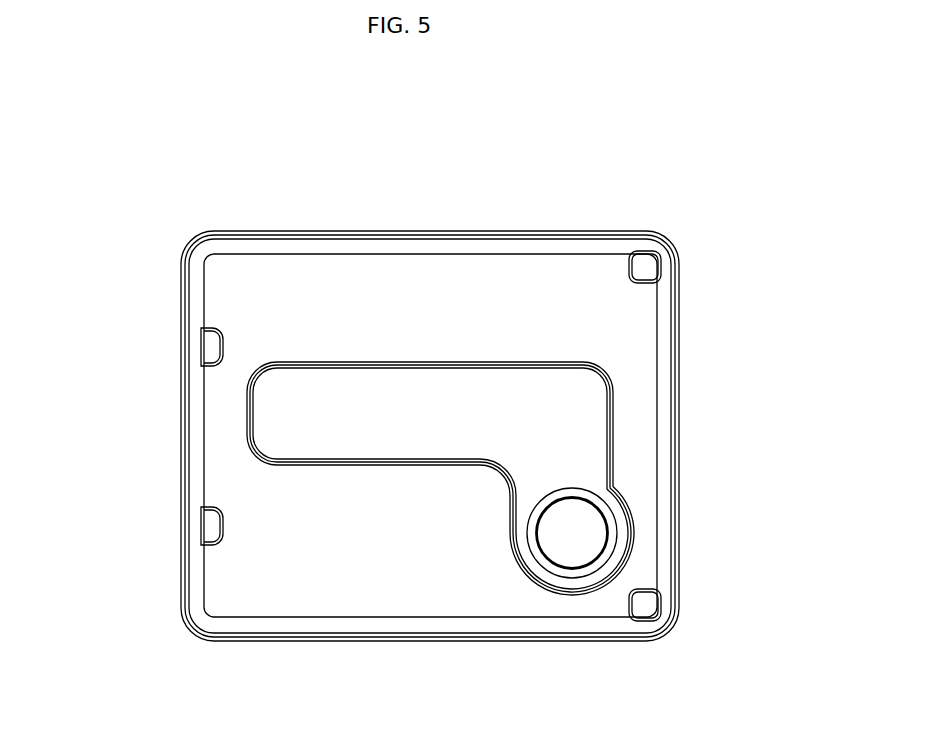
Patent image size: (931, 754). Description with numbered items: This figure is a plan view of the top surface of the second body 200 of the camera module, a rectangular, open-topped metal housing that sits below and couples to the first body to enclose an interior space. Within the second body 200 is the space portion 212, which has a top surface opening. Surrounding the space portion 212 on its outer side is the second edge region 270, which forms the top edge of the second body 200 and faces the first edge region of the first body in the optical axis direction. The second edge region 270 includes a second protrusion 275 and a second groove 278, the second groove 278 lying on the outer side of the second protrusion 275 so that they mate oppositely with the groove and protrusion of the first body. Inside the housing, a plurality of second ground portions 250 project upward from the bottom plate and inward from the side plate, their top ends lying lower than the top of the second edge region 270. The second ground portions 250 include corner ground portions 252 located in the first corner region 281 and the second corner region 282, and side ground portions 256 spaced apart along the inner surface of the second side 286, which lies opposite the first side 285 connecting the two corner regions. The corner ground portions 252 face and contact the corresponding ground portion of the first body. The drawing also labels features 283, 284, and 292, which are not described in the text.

The second body 200 is at (172, 124).
The space portion 212 is at (440, 296).
The second ground portion 250 is at (429, 430).
The second-1 ground portion 252 is at (648, 262).
The second-2 ground portion 256 is at (208, 348).
The second edge region 270 is at (690, 271).
The second protrusion 275 is at (436, 618).
The second groove 278 is at (513, 642).
The first corner region 281 is at (667, 225).
The second corner region 282 is at (683, 638).
The upper left corner 283 is at (179, 227).
The lower left corner 284 is at (177, 631).
The first side 285 is at (690, 378).
The second side 286 is at (177, 403).
The circular opening 292 is at (572, 536).